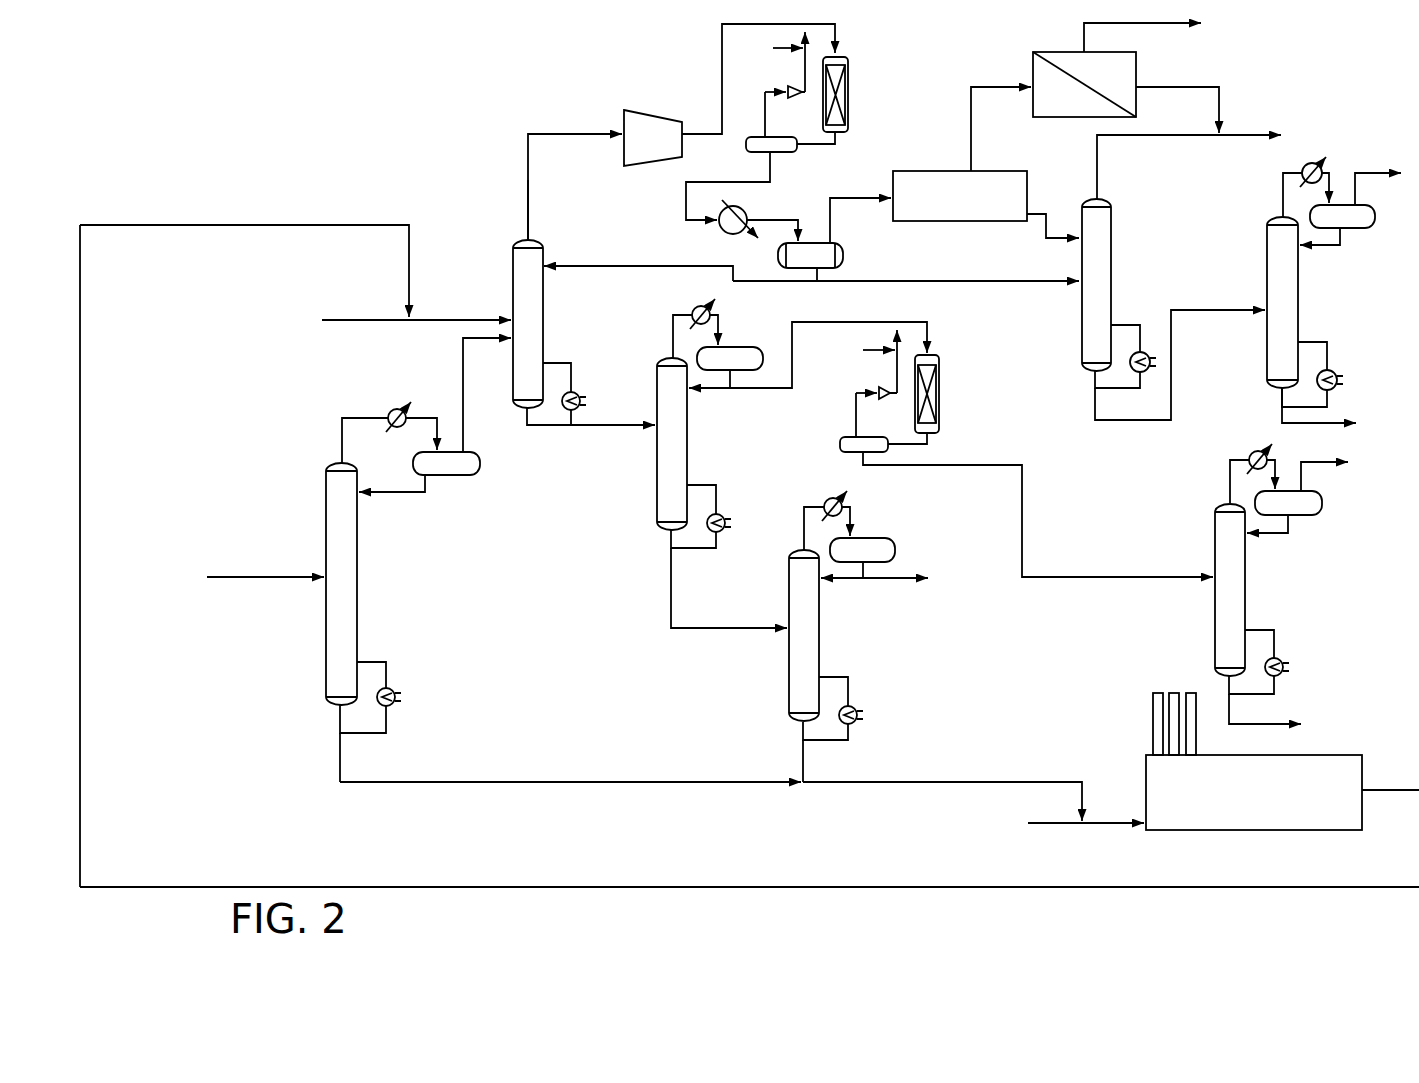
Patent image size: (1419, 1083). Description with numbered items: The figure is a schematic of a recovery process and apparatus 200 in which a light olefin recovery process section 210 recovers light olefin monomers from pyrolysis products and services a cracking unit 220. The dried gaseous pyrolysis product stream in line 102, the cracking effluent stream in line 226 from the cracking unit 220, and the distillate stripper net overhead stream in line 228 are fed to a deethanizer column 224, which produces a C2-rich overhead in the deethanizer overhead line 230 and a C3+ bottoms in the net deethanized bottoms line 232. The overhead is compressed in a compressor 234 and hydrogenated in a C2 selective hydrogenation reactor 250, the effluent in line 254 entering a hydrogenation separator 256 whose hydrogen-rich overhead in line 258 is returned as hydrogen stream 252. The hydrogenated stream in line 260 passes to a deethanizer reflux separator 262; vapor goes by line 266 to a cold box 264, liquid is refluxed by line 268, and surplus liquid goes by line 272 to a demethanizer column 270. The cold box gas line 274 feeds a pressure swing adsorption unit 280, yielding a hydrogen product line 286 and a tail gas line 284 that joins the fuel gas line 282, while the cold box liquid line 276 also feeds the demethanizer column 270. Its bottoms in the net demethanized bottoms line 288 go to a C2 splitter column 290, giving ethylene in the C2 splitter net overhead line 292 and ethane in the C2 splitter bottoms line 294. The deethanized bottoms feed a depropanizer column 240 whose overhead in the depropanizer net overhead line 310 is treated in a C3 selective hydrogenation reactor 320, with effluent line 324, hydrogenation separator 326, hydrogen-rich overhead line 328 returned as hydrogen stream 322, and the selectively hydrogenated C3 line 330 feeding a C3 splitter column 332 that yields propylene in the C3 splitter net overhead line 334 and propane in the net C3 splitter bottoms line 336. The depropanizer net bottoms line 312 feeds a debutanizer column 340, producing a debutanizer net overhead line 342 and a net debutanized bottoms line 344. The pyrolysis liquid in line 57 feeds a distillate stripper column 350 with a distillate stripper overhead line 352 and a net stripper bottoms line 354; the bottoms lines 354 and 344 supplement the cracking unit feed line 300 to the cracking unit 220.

The recovery process and apparatus 200 is at (248, 66).
The light olefin recovery process (LORP) section 210 is at (592, 88).
The dried gaseous pyrolysis product line 102 is at (390, 322).
The high-temperature pyrolysis liquid line 57 is at (262, 580).
The cracking unit 220 is at (1146, 758).
The deethanizer column 224 is at (545, 342).
The cracking effluent line 226 is at (80, 812).
The distillate stripper net overhead line 228 is at (466, 416).
The deethanizer overhead line 230 is at (528, 196).
The net deethanized bottoms line 232 is at (593, 428).
The compressor 234 is at (660, 114).
The depropanizer column 240 is at (689, 467).
The C2 selective hydrogenation reactor 250 is at (850, 90).
The hydrogen stream 252 is at (805, 70).
The hydrogenated effluent line 254 is at (840, 131).
The hydrogenation separator 256 is at (764, 111).
The hydrogen-rich overhead line 258 is at (748, 135).
The hydrogenated deethanizer overhead line 260 is at (771, 176).
The deethanizer reflux separator 262 is at (843, 255).
The cold box 264 is at (970, 221).
The vapor line 266 is at (830, 215).
The reflux line 268 is at (634, 265).
The demethanizer column 270 is at (1113, 289).
The surplus reflux liquid line 272 is at (1005, 285).
The cold box gas line 274 is at (994, 92).
The cold box liquid line 276 is at (1046, 214).
The pressure swing adsorption unit 280 is at (1136, 58).
The fuel gas line 282 is at (1193, 138).
The tail gas line 284 is at (1220, 101).
The hydrogen product line 286 is at (1084, 42).
The net demethanized bottoms line 288 is at (1095, 406).
The C2 splitter column 290 is at (1300, 322).
The C2 splitter net overhead line 292 is at (1361, 173).
The C2 splitter bottoms line 294 is at (1282, 420).
The cracking unit feed line 300 is at (1053, 824).
The depropanizer net overhead line 310 is at (768, 392).
The depropanizer net bottoms line 312 is at (673, 582).
The C3 selective hydrogenation reactor 320 is at (940, 390).
The hydrogen stream 322 is at (897, 368).
The hydrogenated effluent line 324 is at (933, 440).
The hydrogenation separator 326 is at (857, 412).
The hydrogen-rich overhead line 328 is at (850, 437).
The selectively hydrogenated C3 line 330 is at (1022, 490).
The C3 splitter column 332 is at (1215, 528).
The C3 splitter net overhead line 334 is at (1333, 462).
The net C3 splitter bottoms line 336 is at (1242, 703).
The debutanizer column 340 is at (821, 660).
The debutanizer net overhead line 342 is at (887, 580).
The net debutanized bottoms line 344 is at (805, 762).
The distillate stripper column 350 is at (360, 573).
The distillate stripper overhead line 352 is at (368, 416).
The net stripper bottoms line 354 is at (420, 780).